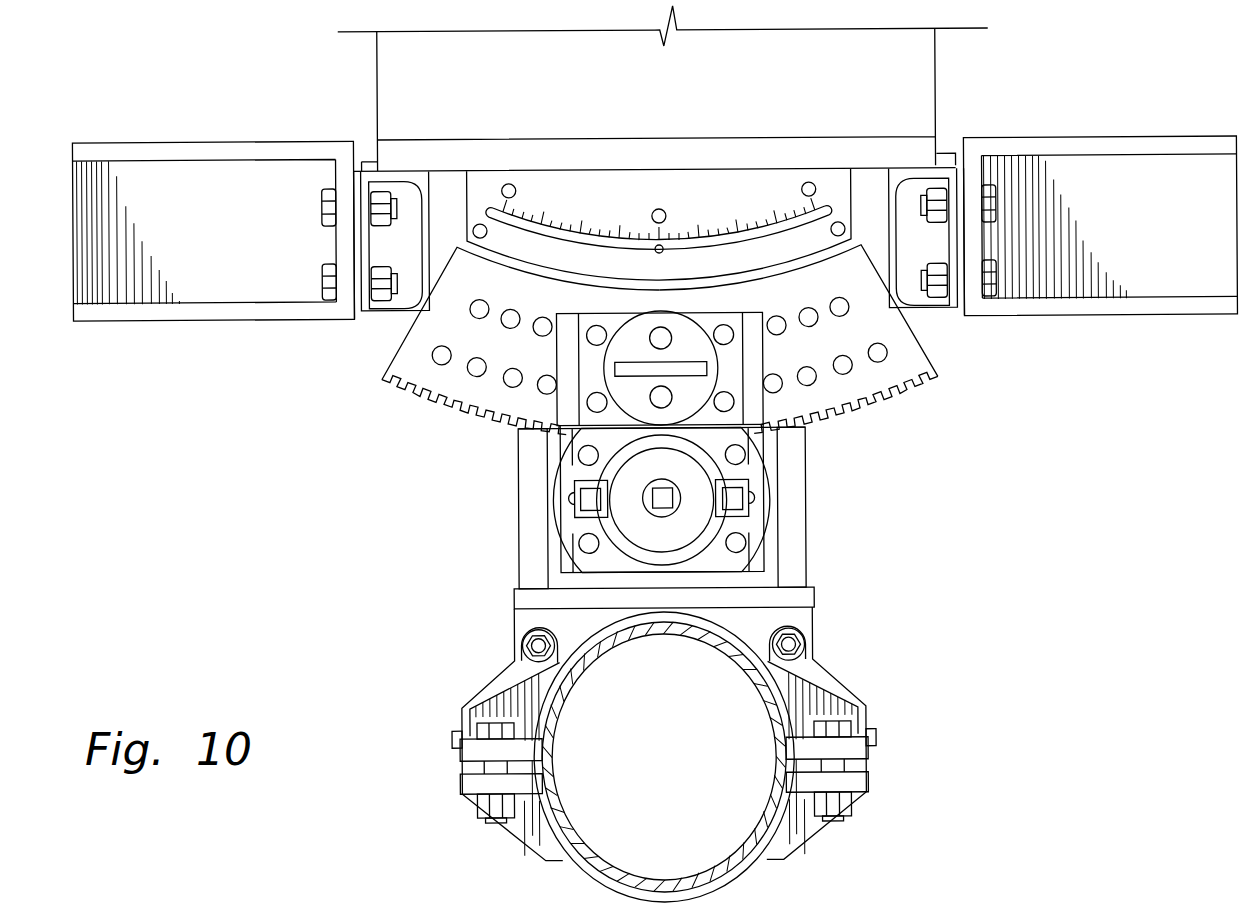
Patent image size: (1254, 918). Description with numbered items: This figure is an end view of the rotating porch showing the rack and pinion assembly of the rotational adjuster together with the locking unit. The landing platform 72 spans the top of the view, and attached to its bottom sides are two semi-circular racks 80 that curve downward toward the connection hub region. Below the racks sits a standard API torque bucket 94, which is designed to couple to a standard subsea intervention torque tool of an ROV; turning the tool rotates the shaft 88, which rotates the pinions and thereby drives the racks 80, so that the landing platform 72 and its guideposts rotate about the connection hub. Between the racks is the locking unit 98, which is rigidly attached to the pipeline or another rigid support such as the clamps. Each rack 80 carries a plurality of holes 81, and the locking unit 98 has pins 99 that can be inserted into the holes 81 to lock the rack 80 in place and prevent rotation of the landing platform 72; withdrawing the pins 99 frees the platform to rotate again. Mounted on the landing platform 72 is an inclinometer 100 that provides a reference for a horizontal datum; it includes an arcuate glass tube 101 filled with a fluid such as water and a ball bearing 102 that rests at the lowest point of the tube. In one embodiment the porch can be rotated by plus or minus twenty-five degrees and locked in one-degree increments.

The landing platform 72 is at (1128, 139).
The semi-circular rack 80 is at (903, 354).
The holes 81 is at (432, 355).
The shaft 88 is at (655, 505).
The API torque bucket 94 is at (697, 516).
The locking unit 98 is at (660, 377).
The pins 99 is at (668, 336).
The inclinometer 100 is at (658, 184).
The arcuate glass tube 101 is at (596, 245).
The ball bearing 102 is at (665, 248).